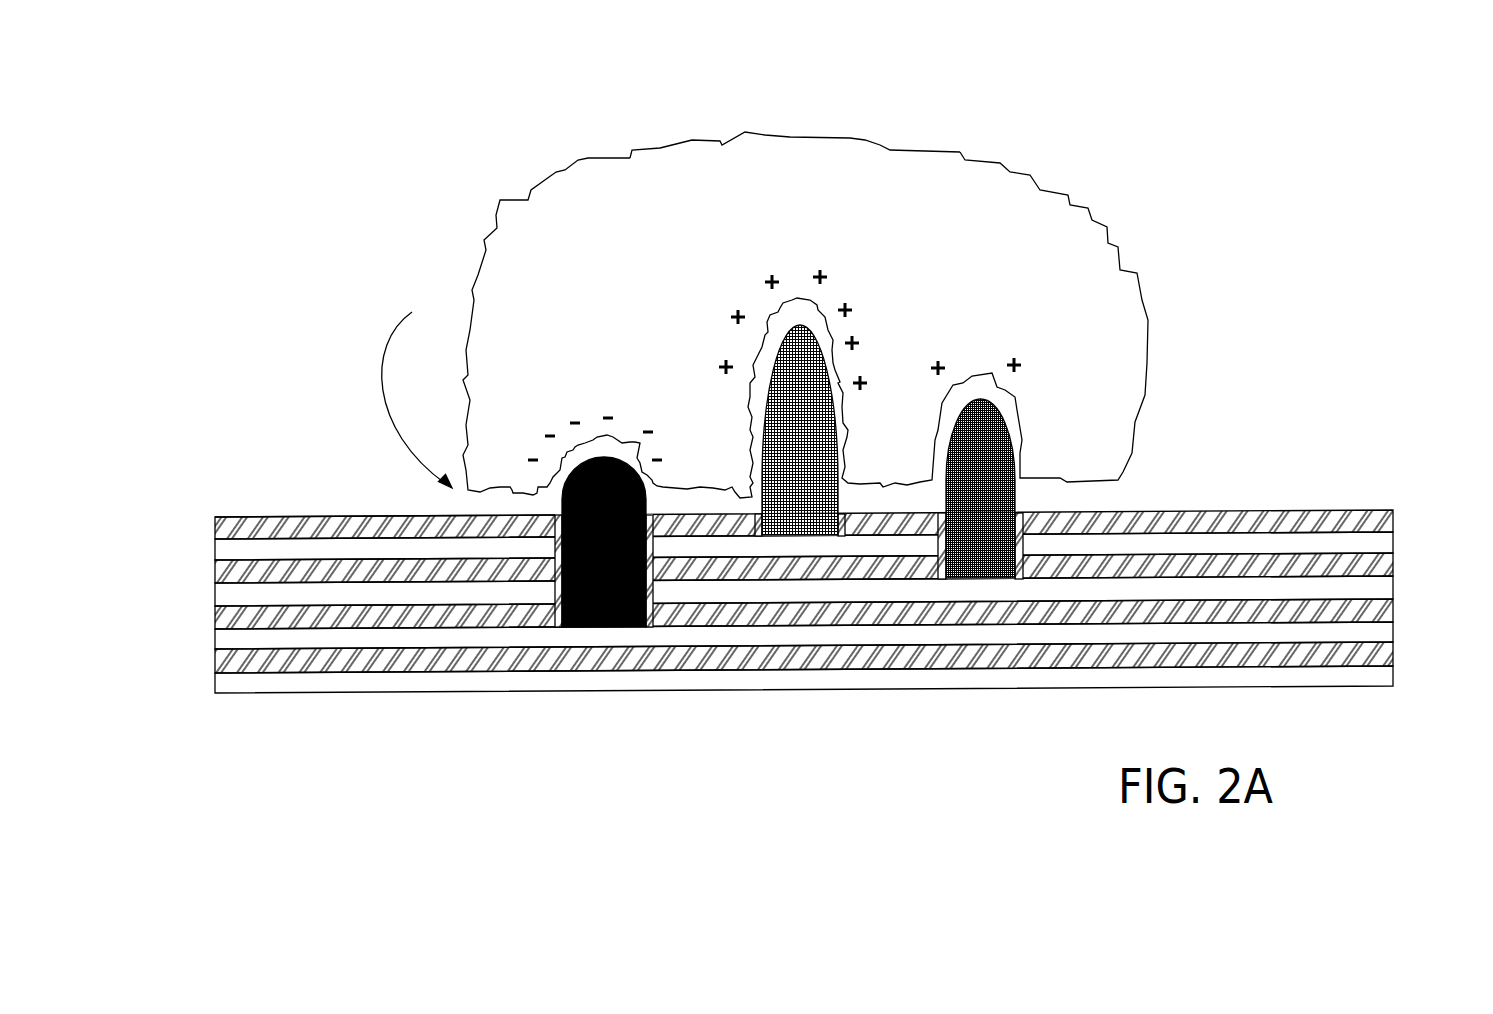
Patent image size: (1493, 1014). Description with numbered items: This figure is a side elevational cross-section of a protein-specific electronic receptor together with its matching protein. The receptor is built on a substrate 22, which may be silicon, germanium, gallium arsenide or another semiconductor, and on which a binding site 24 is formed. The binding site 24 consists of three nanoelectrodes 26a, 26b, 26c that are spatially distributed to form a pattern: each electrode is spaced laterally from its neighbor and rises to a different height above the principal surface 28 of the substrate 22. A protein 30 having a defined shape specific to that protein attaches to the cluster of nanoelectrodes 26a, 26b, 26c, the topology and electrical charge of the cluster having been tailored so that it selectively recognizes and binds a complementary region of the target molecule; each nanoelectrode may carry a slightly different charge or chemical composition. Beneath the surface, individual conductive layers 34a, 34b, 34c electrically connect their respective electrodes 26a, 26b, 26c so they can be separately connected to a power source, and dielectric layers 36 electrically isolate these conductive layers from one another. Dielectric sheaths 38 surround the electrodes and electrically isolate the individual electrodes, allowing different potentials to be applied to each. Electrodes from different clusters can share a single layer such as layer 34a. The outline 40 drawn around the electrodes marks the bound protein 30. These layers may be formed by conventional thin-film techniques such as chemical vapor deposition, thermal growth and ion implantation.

The substrate 22 is at (348, 682).
The binding site 24 is at (417, 374).
The electrode 26a is at (608, 457).
The electrode 26b is at (806, 325).
The electrode 26c is at (1007, 427).
The principal surface 28 is at (302, 517).
The protein 30 is at (1108, 232).
The conductive layer 34a is at (230, 640).
The conductive layer 34b is at (233, 552).
The conductive layer 34c is at (1380, 587).
The dielectric layer 36 is at (1372, 517).
The dielectric sheath 38 is at (648, 592).
The outer surface of body 40 is at (774, 120).